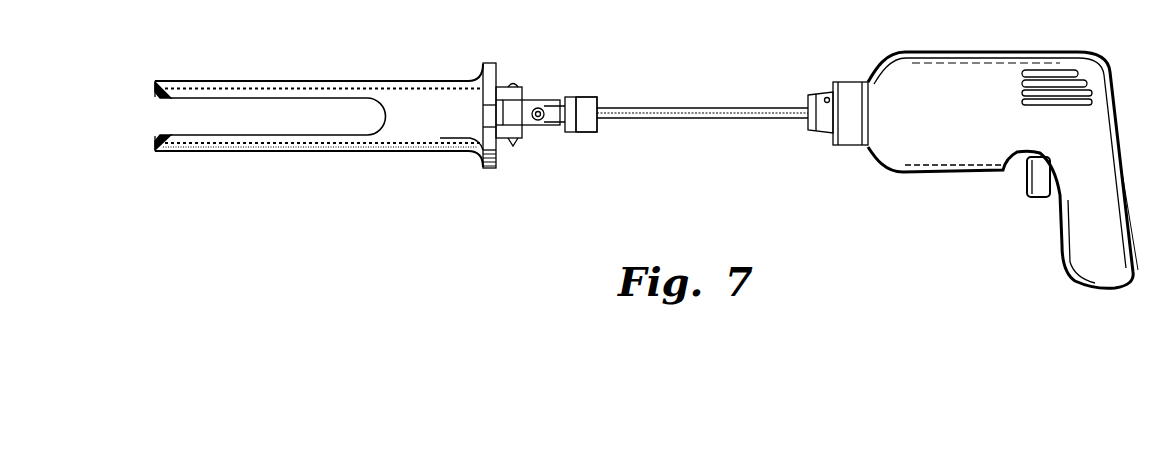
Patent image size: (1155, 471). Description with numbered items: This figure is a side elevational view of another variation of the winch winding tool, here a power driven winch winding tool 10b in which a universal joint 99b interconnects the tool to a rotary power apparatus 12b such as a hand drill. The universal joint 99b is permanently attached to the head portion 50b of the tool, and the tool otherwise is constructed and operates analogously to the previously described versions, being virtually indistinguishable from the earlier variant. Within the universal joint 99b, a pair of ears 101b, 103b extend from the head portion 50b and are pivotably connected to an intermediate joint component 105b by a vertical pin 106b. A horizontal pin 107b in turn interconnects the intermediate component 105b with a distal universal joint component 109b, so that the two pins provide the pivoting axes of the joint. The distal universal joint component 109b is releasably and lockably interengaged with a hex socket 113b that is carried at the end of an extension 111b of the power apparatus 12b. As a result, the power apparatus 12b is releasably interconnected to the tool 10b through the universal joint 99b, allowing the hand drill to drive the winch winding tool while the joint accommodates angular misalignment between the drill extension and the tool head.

The power driven winch winding tool 10b is at (437, 47).
The power apparatus 12b is at (1057, 217).
The head portion 50b is at (493, 62).
The universal joint 99b is at (533, 132).
The ear 101b is at (518, 145).
The ear 103b is at (500, 87).
The intermediate joint component 105b is at (527, 126).
The vertical pin 106b is at (512, 150).
The horizontal pin 107b is at (577, 99).
The distal universal joint component 109b is at (548, 121).
The extension 111b is at (716, 118).
The hex socket 113b is at (586, 108).